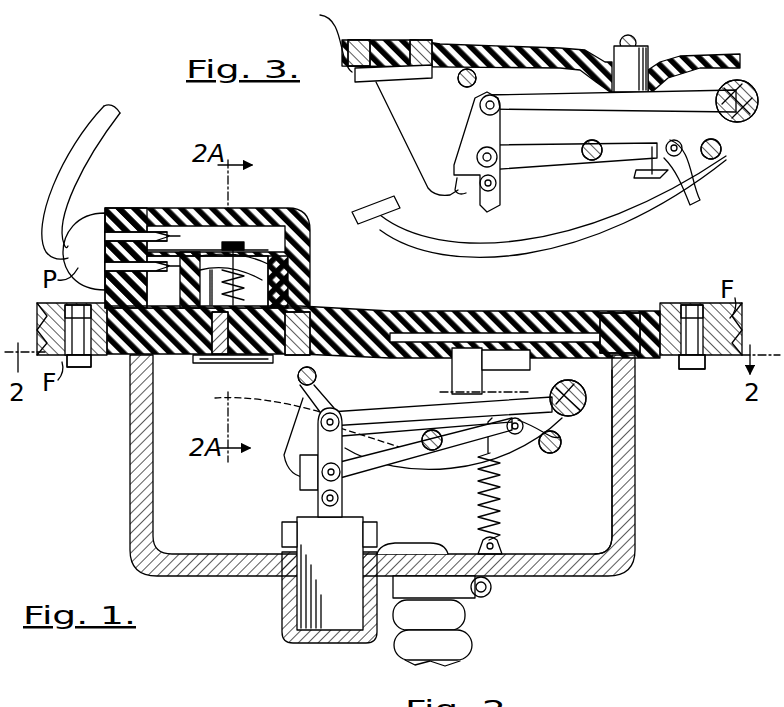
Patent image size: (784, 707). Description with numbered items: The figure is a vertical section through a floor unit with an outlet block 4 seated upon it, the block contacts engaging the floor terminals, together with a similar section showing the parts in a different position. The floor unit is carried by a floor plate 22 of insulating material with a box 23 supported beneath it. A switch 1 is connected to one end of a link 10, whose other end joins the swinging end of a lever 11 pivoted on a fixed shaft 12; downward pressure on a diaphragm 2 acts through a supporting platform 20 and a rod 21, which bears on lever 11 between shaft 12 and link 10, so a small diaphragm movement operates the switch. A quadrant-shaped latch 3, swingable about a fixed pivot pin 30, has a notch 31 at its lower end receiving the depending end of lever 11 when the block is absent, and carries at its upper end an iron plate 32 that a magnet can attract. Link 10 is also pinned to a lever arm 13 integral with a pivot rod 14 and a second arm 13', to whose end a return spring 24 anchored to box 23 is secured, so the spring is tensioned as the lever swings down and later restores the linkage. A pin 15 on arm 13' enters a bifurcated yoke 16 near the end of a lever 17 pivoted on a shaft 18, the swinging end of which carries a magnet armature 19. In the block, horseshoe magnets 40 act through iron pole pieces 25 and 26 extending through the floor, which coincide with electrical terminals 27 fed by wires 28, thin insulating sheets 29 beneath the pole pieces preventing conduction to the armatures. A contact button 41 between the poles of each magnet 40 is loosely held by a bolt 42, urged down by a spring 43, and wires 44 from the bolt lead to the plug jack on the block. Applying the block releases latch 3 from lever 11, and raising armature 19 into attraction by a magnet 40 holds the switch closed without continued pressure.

In FIG. 1, the switch 1 is at (368, 517).
In FIG. 1, the diaphragm 2 is at (524, 322).
In FIG. 3, the latch 3 is at (405, 135).
In FIG. 1, the latch 3 is at (258, 448).
In FIG. 1, the outlet block 4 is at (115, 208).
In FIG. 3, the link 10 is at (492, 135).
In FIG. 1, the link 10 is at (340, 492).
In FIG. 3, the lever 11 is at (550, 100).
In FIG. 1, the lever 11 is at (382, 410).
In FIG. 3, the fixed shaft 12 is at (730, 120).
In FIG. 1, the fixed shaft 12 is at (580, 410).
In FIG. 3, the lever arm 13 is at (572, 170).
In FIG. 1, the lever arm 13 is at (426, 459).
In FIG. 3, the lever arm 13' is at (589, 169).
In FIG. 1, the lever arm 13' is at (458, 434).
In FIG. 3, the pivot rod 14 is at (596, 146).
In FIG. 1, the pivot rod 14 is at (410, 438).
In FIG. 3, the pin 15 is at (672, 146).
In FIG. 1, the pin 15 is at (520, 436).
In FIG. 3, the yoke 16 is at (698, 203).
In FIG. 1, the yoke 16 is at (558, 432).
In FIG. 3, the lever 17 is at (625, 215).
In FIG. 1, the lever 17 is at (458, 466).
In FIG. 3, the shaft 18 is at (720, 155).
In FIG. 1, the shaft 18 is at (550, 453).
In FIG. 3, the magnet armature 19 is at (385, 204).
In FIG. 1, the supporting platform 20 is at (458, 333).
In FIG. 3, the rod 21 is at (634, 42).
In FIG. 1, the rod 21 is at (450, 372).
In FIG. 3, the floor plate 22 is at (690, 52).
In FIG. 1, the floor plate 22 is at (600, 320).
In FIG. 1, the box 23 is at (630, 462).
In FIG. 3, the return spring 24 is at (642, 178).
In FIG. 1, the return spring 24 is at (502, 498).
In FIG. 3, the pole piece 25 is at (416, 42).
In FIG. 1, the pole piece 25 is at (318, 308).
In FIG. 3, the pole piece 26 is at (358, 42).
In FIG. 1, the pole piece 26 is at (190, 363).
In FIG. 1, the terminal 27 is at (300, 262).
In FIG. 1, the wire 28 is at (152, 455).
In FIG. 3, the insulating sheet 29 is at (317, 39).
In FIG. 1, the insulating sheet 29 is at (240, 358).
In FIG. 3, the pivot pin 30 is at (476, 80).
In FIG. 1, the pivot pin 30 is at (317, 376).
In FIG. 3, the notch 31 is at (460, 192).
In FIG. 1, the notch 31 is at (285, 490).
In FIG. 3, the plate 32 is at (375, 84).
In FIG. 1, the plate 32 is at (218, 363).
In FIG. 1, the magnet 40 is at (262, 252).
In FIG. 1, the contact button 41 is at (298, 232).
In FIG. 1, the bolt 42 is at (232, 242).
In FIG. 1, the spring 43 is at (258, 262).
In FIG. 1, the wire 44 is at (172, 208).